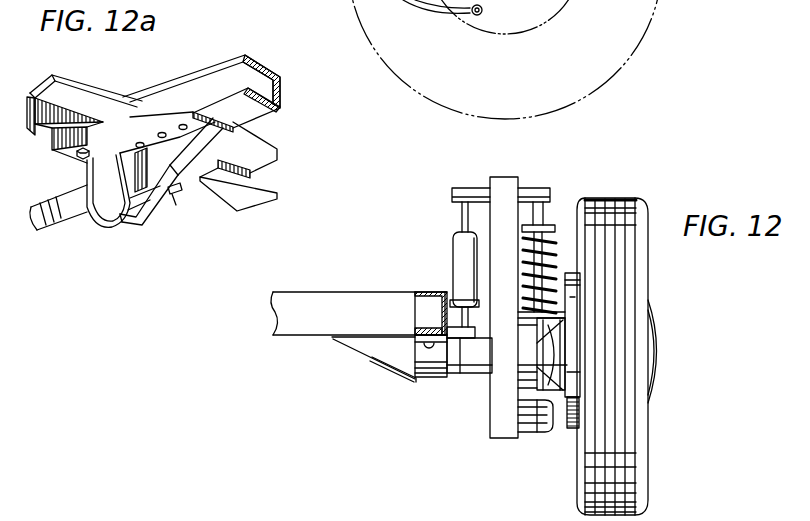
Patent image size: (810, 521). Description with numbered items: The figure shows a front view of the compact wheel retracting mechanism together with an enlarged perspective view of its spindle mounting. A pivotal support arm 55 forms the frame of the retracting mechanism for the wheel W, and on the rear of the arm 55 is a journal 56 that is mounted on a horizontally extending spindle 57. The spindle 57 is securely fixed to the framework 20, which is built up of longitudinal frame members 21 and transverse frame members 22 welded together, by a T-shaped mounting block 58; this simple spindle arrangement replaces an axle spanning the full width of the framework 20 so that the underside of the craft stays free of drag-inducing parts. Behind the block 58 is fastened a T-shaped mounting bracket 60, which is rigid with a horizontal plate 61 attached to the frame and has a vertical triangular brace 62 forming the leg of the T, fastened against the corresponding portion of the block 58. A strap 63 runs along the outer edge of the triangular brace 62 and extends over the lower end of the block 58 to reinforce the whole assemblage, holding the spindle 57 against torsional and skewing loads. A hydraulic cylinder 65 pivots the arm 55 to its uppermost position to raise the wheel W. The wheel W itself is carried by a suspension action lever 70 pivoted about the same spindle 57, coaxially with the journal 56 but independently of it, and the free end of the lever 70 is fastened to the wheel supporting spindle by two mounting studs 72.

In FIG. 12A, the framework 20 is at (296, 141).
In FIG. 12, the longitudinal frame member 21 is at (432, 292).
In FIG. 12, the transverse frame member 22 is at (272, 319).
In FIG. 12, the pivotal support arm 55 is at (498, 411).
In FIG. 12, the journal 56 is at (473, 358).
In FIG. 12A, the spindle 57 is at (72, 216).
In FIG. 12A, the T-shaped mounting block 58 is at (105, 215).
In FIG. 12, the T-shaped mounting block 58 is at (423, 358).
In FIG. 12A, the T-shaped mounting bracket 60 is at (141, 100).
In FIG. 12A, the horizontal plate 61 is at (218, 153).
In FIG. 12A, the vertical triangular brace 62 is at (172, 196).
In FIG. 12A, the strap 63 is at (142, 226).
In FIG. 12, the hydraulic cylinder 65 is at (457, 248).
In FIG. 12, the suspension action lever 70 is at (533, 393).
In FIG. 12, the mounting studs 72 is at (563, 318).
In FIG. 12, the wheel W is at (648, 33).